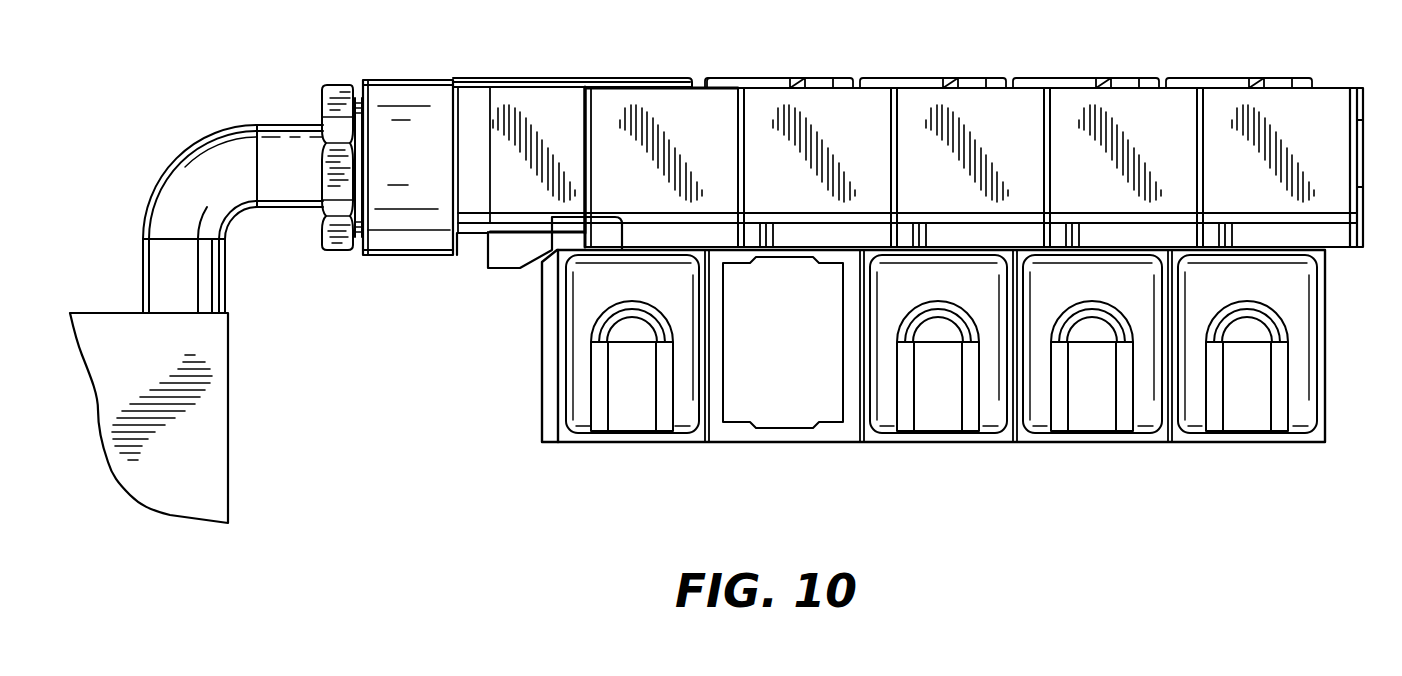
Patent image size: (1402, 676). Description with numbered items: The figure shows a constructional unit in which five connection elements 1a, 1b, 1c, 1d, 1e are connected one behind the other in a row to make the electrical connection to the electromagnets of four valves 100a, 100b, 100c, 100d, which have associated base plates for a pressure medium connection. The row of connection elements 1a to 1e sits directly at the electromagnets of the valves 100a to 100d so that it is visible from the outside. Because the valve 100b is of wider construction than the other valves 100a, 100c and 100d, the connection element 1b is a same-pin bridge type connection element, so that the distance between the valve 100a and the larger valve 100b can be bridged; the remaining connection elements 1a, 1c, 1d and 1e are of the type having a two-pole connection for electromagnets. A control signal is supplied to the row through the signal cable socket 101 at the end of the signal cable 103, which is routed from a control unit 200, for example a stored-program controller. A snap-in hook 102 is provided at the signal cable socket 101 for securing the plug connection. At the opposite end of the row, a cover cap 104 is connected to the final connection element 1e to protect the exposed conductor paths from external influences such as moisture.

The connection element 1a is at (682, 142).
The connection element 1b is at (825, 120).
The connection element 1c is at (955, 130).
The connection element 1d is at (1107, 130).
The connection element 1e is at (1258, 130).
The valve 100a is at (637, 400).
The valve 100b is at (943, 397).
The valve 100c is at (1100, 390).
The valve 100d is at (1250, 380).
The signal cable socket 101 is at (398, 133).
The snap-in hook 102 is at (638, 82).
The signal cable 103 is at (290, 155).
The cover cap 104 is at (1360, 97).
The control unit 200 is at (175, 372).